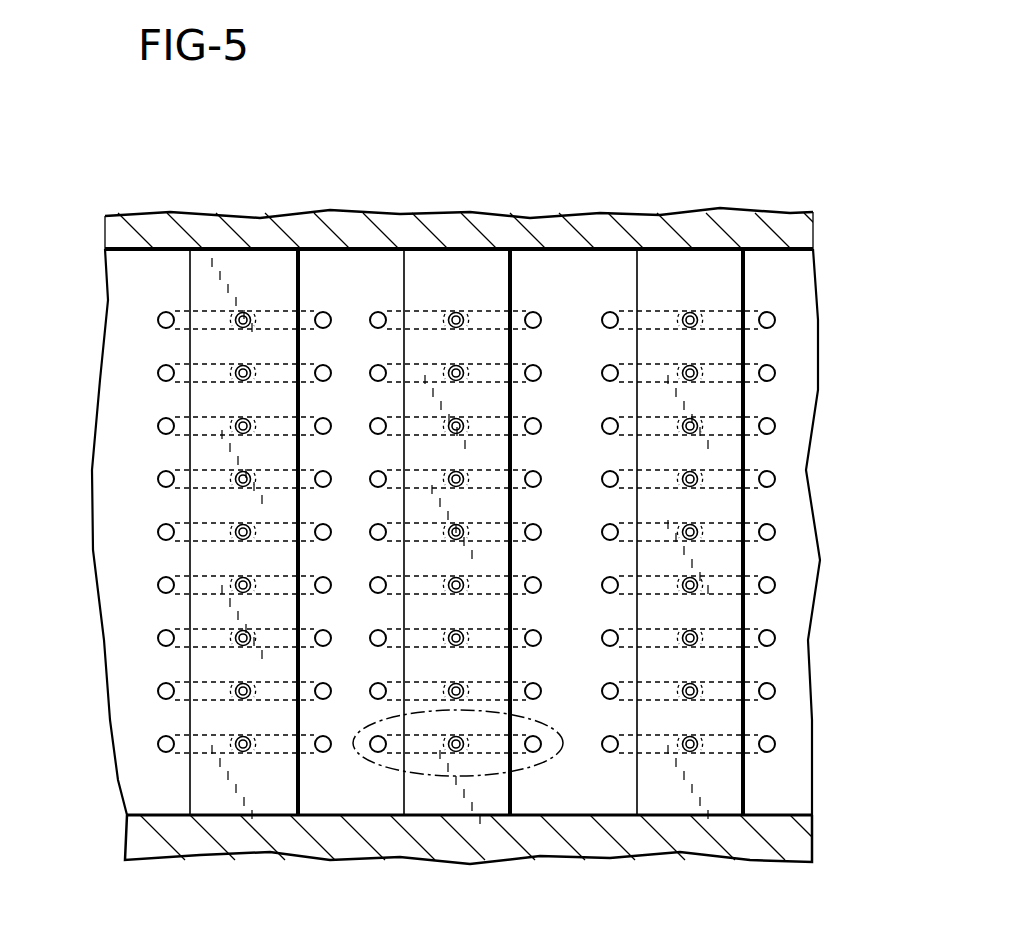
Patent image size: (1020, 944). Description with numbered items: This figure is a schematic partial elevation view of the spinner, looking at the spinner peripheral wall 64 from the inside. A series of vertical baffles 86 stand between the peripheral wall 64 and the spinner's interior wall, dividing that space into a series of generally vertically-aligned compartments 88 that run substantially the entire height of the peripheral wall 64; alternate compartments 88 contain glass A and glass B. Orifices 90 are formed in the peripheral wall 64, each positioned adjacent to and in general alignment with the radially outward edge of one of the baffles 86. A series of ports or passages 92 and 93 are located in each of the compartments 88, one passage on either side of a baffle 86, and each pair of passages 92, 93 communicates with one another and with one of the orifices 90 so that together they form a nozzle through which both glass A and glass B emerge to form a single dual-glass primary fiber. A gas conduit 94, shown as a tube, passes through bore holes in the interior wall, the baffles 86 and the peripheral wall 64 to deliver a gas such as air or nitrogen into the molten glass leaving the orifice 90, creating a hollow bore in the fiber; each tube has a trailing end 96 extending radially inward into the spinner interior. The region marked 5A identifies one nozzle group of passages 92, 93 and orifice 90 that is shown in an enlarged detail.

The spinner peripheral wall 64 is at (752, 236).
The vertical baffles 86 is at (243, 272).
The compartments 88 is at (130, 298).
The orifices 90 is at (238, 312).
The passage 92 is at (324, 420).
The passage 93 is at (160, 478).
The gas conduit 94 is at (452, 312).
The trailing end 96 is at (243, 642).
The detail region 5A is at (440, 778).